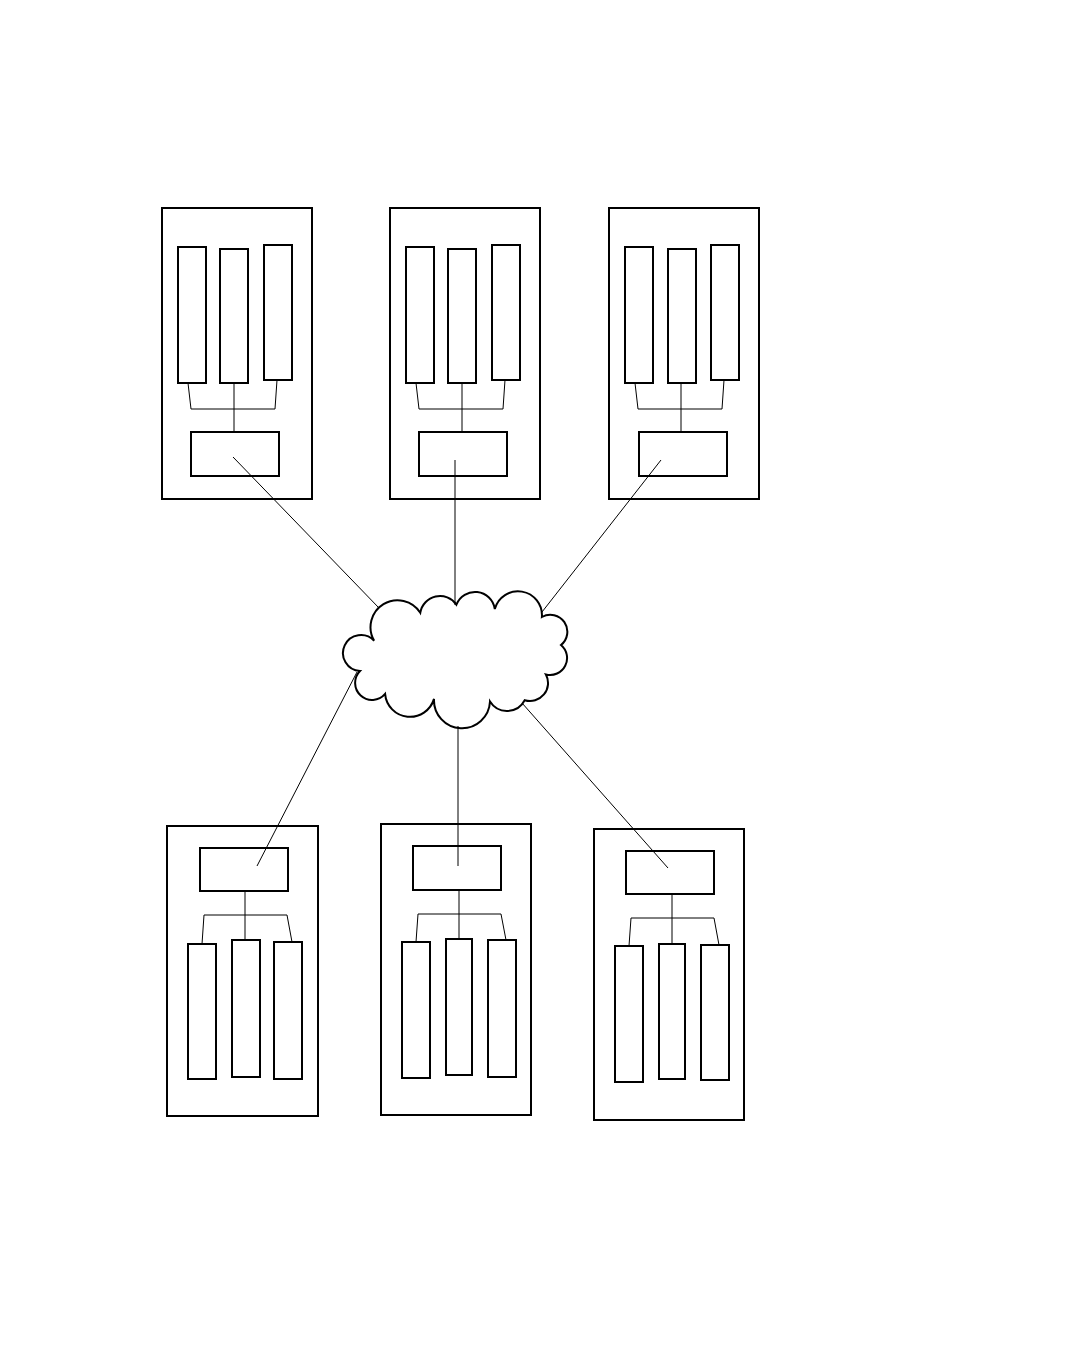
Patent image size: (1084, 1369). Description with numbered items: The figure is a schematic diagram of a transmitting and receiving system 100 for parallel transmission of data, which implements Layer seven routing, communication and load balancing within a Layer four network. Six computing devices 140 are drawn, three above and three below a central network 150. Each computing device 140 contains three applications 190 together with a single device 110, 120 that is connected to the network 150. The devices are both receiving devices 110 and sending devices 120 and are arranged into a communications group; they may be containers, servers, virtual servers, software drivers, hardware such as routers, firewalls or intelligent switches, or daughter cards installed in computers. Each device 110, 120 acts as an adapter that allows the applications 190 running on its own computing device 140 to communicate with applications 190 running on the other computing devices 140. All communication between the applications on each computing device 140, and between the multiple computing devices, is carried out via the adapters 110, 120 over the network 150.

The transmitting and receiving system 100 is at (675, 668).
The receiving device 110 is at (502, 626).
The sending device 120 is at (215, 452).
The computing device 140 is at (217, 206).
The network 150 is at (525, 648).
The application 190 is at (197, 332).